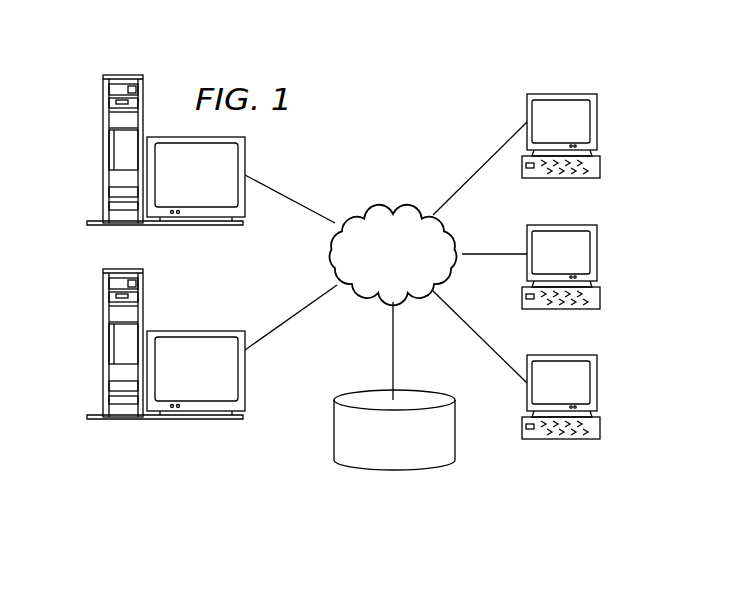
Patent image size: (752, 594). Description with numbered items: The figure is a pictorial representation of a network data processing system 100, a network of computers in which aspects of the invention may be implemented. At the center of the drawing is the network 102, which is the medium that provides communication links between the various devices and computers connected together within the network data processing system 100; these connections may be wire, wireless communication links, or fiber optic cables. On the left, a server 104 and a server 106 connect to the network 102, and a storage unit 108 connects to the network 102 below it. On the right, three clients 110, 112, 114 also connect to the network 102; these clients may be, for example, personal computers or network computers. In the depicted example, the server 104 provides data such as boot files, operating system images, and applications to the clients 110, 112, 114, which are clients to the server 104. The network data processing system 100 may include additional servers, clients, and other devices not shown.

The network data processing system 100 is at (443, 101).
The network 102 is at (367, 208).
The server 104 is at (103, 345).
The server 106 is at (103, 152).
The storage unit 108 is at (378, 469).
The client 110 is at (597, 122).
The client 112 is at (597, 255).
The client 114 is at (597, 385).